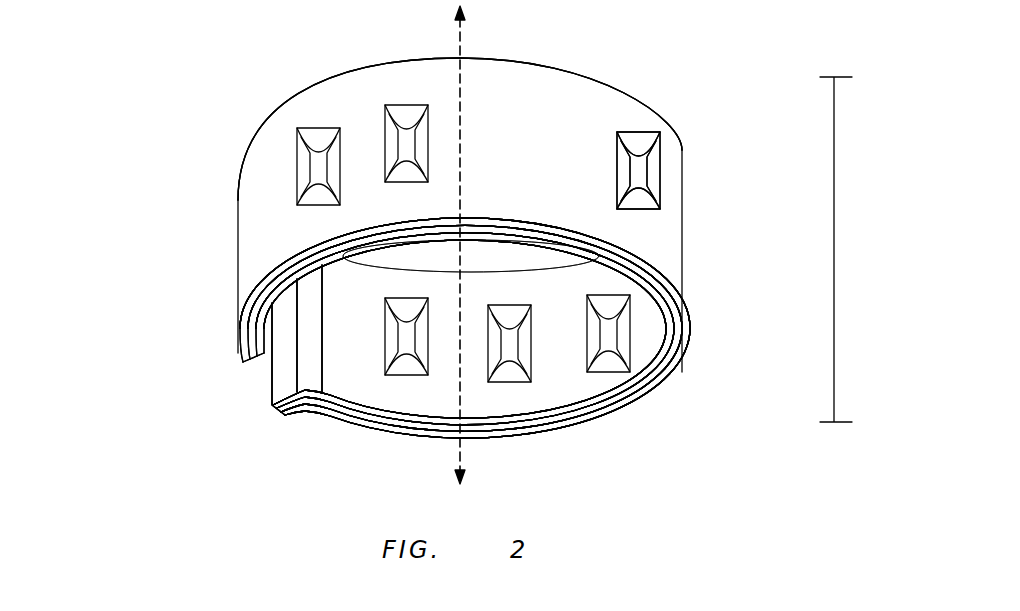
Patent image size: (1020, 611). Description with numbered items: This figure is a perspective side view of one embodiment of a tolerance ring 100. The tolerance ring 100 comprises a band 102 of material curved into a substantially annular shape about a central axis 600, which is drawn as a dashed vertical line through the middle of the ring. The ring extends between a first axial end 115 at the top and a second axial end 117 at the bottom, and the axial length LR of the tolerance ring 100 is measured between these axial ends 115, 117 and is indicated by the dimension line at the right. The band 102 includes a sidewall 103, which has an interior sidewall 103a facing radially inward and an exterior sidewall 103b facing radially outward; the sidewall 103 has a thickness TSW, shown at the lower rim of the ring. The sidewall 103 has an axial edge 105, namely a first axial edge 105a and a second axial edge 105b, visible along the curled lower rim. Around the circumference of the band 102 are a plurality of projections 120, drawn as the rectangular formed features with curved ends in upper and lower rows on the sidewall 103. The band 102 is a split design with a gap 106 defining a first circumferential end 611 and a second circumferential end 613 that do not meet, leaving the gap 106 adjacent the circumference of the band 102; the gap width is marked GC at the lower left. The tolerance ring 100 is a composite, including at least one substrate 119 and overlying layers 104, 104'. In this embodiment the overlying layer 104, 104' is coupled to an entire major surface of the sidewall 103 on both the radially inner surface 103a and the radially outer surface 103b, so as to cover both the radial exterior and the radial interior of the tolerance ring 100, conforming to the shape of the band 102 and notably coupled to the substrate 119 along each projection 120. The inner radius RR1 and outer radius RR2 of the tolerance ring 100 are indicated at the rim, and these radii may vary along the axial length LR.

The tolerance ring 100 is at (118, 158).
The band 102 is at (537, 107).
The sidewall 103 is at (683, 197).
The interior sidewall 103a is at (592, 400).
The exterior sidewall 103b is at (378, 97).
The overlying layer 104 is at (465, 352).
The overlying layer 104' is at (471, 213).
The axial edge 105 is at (357, 422).
The first axial edge 105a is at (465, 371).
The second axial edge 105b is at (560, 238).
The gap 106 is at (258, 377).
The first axial end 115 is at (597, 103).
The second axial end 117 is at (673, 372).
The substrate 119 is at (522, 265).
The projections 120 is at (658, 162).
The central axis 600 is at (466, 36).
The first circumferential end 611 is at (243, 365).
The second circumferential end 613 is at (280, 417).
The gap width GC is at (320, 412).
The inner radius RR1 is at (630, 285).
The outer radius RR2 is at (560, 296).
The sidewall thickness TSW is at (625, 402).
The axial length LR is at (835, 240).